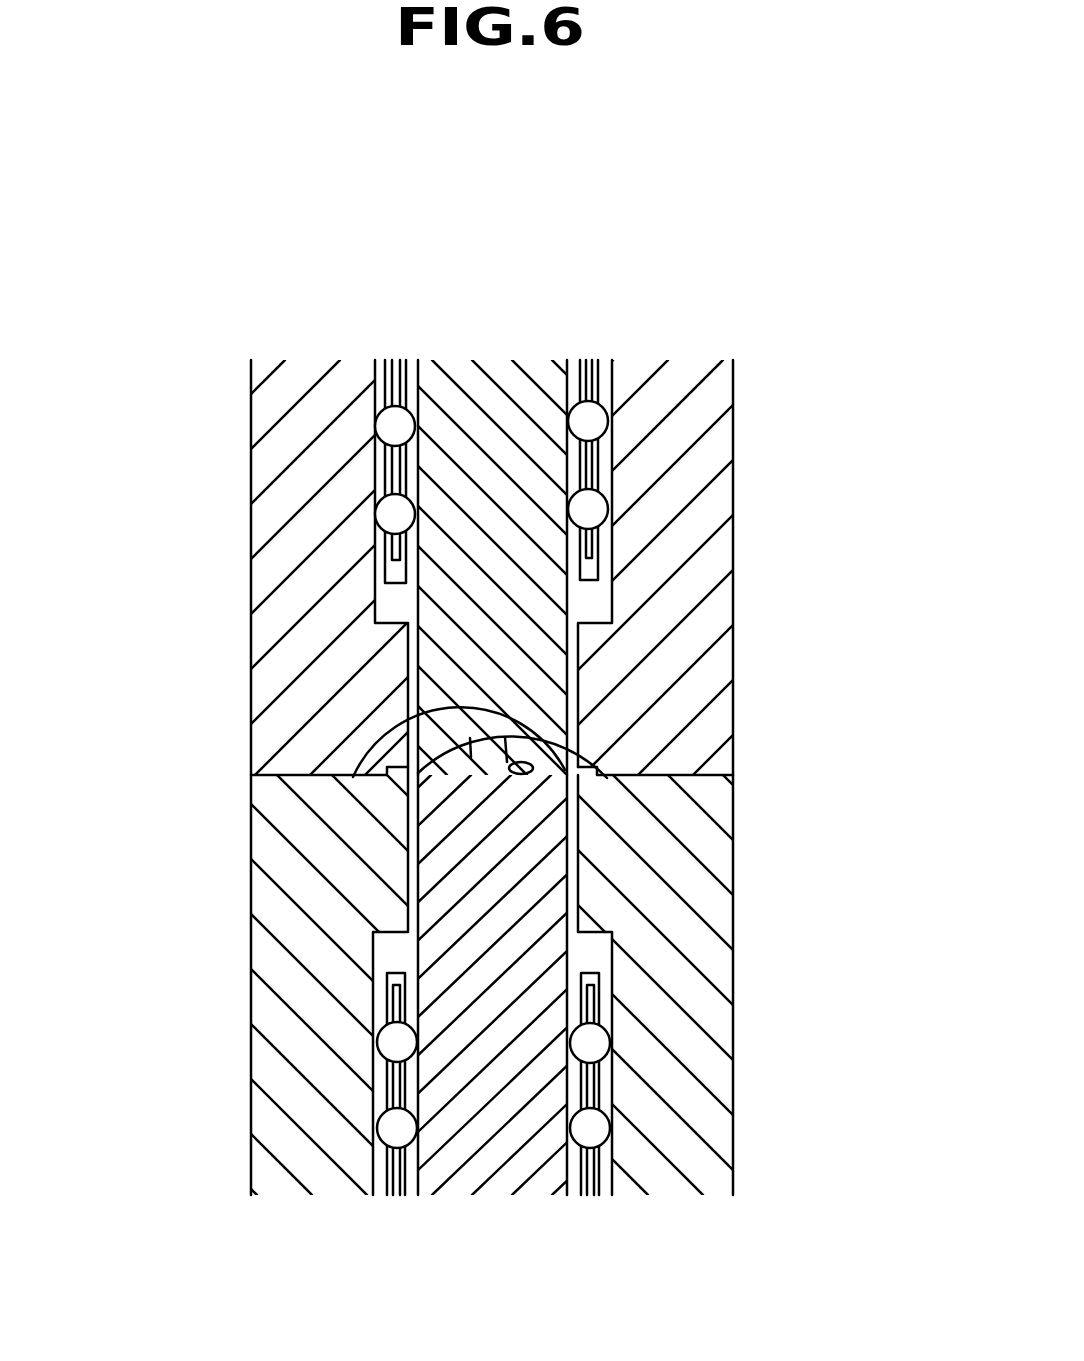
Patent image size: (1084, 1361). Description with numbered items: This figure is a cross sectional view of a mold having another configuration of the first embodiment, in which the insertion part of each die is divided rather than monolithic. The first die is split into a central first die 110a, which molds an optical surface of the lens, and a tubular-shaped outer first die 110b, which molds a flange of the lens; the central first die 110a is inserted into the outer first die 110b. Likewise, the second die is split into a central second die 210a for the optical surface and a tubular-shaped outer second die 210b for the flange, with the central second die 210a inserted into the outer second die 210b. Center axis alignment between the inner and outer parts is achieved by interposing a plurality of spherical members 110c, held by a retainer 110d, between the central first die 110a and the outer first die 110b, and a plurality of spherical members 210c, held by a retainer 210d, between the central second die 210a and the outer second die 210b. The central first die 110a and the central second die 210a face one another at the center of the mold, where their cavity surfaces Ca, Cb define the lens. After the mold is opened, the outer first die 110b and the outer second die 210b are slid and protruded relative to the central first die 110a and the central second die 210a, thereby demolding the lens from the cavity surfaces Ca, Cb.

The central first die 110a is at (505, 385).
The outer first die 110b is at (680, 385).
The spherical members 110c is at (398, 420).
The retainer 110d is at (392, 553).
The central second die 210a is at (510, 1172).
The outer second die 210b is at (682, 1170).
The spherical members 210c is at (397, 1122).
The retainer 210d is at (397, 1007).
The cavity surface Ca is at (552, 777).
The cavity surface Cb is at (355, 777).